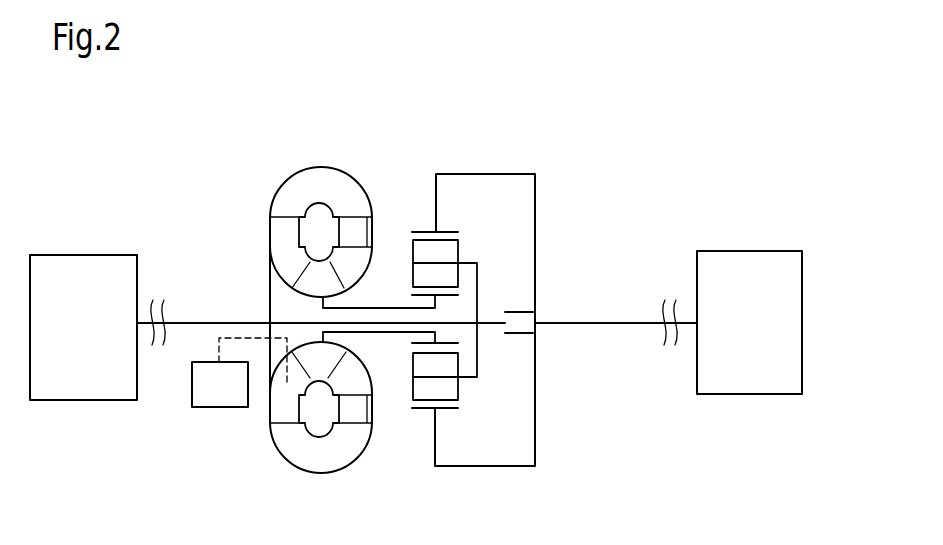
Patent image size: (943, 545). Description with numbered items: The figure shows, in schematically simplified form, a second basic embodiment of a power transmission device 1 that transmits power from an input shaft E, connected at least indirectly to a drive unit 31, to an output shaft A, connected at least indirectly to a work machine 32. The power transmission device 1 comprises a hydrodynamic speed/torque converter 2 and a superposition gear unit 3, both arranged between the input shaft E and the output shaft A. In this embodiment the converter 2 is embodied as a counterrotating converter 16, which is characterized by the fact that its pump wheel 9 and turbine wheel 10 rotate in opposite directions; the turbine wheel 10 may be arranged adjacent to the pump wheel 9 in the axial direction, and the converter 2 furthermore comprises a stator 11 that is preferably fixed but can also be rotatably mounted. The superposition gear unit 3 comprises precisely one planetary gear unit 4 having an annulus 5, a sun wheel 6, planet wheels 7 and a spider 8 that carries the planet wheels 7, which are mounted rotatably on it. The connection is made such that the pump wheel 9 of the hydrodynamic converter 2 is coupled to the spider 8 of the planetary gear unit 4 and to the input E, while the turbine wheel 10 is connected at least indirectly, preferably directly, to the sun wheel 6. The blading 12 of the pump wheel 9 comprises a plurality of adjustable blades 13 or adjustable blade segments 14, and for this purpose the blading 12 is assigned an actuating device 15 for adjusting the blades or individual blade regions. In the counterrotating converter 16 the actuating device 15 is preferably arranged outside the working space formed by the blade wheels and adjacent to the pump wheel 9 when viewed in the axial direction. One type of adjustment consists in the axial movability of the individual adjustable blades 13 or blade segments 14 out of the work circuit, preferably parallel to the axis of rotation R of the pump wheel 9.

The power transmission device 1 is at (406, 118).
The hydrodynamic converter 2 is at (326, 187).
The counterrotating converter 16 is at (326, 215).
The superposition gear unit 3 is at (505, 140).
The planetary gear unit 4 is at (458, 216).
The annulus 5 is at (422, 232).
The sun wheel 6 is at (397, 333).
The planet wheels 7 is at (440, 388).
The spider 8 is at (477, 272).
The pump wheel 9 is at (278, 261).
The turbine wheel 10 is at (306, 290).
The stator 11 is at (354, 222).
The blading 12 is at (266, 395).
The adjustable blades 13 is at (287, 414).
The adjustable blade segments 14 is at (288, 408).
The actuating device 15 is at (207, 395).
The drive unit 31 is at (70, 334).
The work machine 32 is at (736, 334).
The input shaft E is at (182, 323).
The axis of rotation R is at (384, 308).
The output shaft A is at (593, 323).